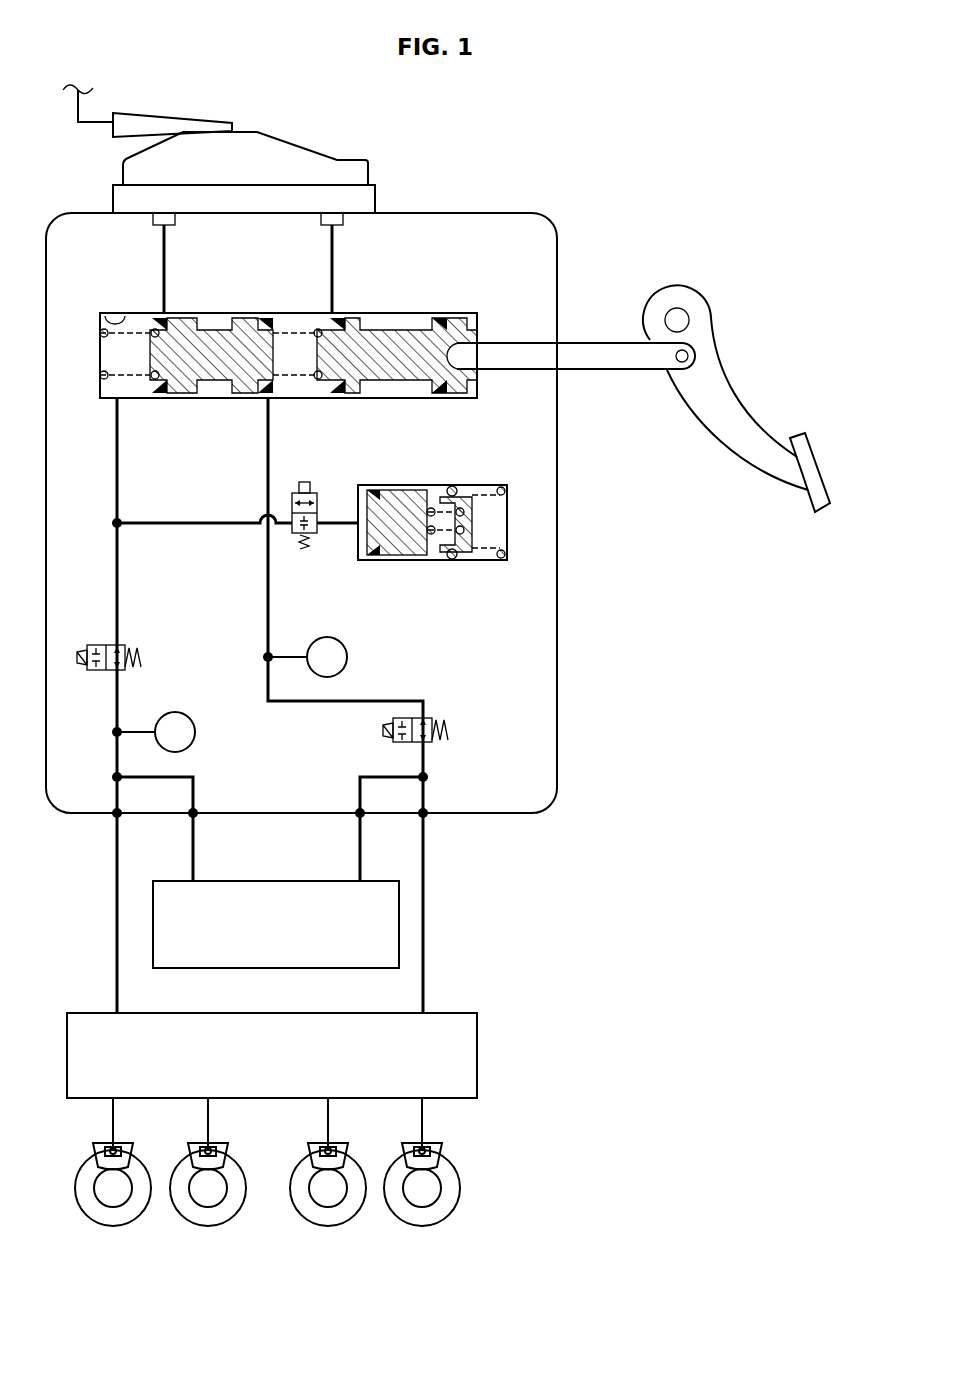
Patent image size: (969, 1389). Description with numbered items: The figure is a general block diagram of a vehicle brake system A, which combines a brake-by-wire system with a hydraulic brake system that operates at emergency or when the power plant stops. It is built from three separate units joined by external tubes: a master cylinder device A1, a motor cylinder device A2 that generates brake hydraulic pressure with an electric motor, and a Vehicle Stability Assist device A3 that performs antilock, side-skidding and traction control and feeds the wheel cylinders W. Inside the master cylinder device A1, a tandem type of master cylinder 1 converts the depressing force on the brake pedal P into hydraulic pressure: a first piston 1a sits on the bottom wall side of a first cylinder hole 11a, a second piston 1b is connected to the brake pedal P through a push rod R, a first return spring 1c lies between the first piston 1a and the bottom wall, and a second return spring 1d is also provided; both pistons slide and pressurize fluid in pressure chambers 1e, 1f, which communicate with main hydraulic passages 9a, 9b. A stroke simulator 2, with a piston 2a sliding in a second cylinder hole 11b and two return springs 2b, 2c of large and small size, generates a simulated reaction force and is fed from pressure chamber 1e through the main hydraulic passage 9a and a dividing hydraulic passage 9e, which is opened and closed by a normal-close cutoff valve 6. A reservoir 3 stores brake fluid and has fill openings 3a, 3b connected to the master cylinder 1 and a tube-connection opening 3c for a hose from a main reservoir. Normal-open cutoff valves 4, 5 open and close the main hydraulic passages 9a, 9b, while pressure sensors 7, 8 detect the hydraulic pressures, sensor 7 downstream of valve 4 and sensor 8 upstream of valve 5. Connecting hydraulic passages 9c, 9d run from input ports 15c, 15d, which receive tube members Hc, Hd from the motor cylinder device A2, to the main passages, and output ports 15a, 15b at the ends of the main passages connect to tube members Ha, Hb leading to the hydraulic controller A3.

The vehicle brake system A is at (470, 197).
The master cylinder device A1 is at (557, 713).
The motor cylinder device A2 is at (272, 968).
The Vehicle Stability Assist device A3 is at (477, 1061).
The tandem type of master cylinder 1 is at (351, 305).
The first piston 1a is at (215, 355).
The second piston 1b is at (393, 355).
The first return spring 1c is at (143, 398).
The second return spring 1d is at (310, 398).
The pressure chamber 1e is at (113, 371).
The pressure chamber 1f is at (281, 371).
The first cylinder hole 11a is at (102, 316).
The second cylinder hole 11b is at (478, 488).
The stroke simulator 2 is at (440, 484).
The piston 2a is at (402, 540).
The return spring 2b is at (437, 547).
The return spring 2c is at (482, 548).
The reservoir 3 is at (285, 139).
The fill opening 3a is at (158, 230).
The fill opening 3b is at (326, 230).
The tube-connection opening 3c is at (150, 113).
The normal-open cutoff valve 4 is at (118, 672).
The normal-open cutoff valve 5 is at (432, 742).
The normal-close cutoff valve 6 is at (300, 535).
The pressure sensor 7 is at (153, 732).
The pressure sensor 8 is at (305, 657).
The main hydraulic passage 9a is at (117, 580).
The main hydraulic passage 9b is at (268, 612).
The connecting hydraulic passage 9c is at (185, 777).
The connecting hydraulic passage 9d is at (380, 777).
The dividing hydraulic passage 9e is at (216, 523).
The output port 15a is at (112, 810).
The output port 15b is at (428, 810).
The input port 15c is at (198, 810).
The input port 15d is at (355, 810).
The tube member Ha is at (115, 853).
The tube member Hb is at (425, 853).
The tube member Hc is at (195, 851).
The tube member Hd is at (358, 851).
The push rod R is at (604, 345).
The brake pedal P is at (803, 503).
The wheel cylinder W is at (118, 1145).